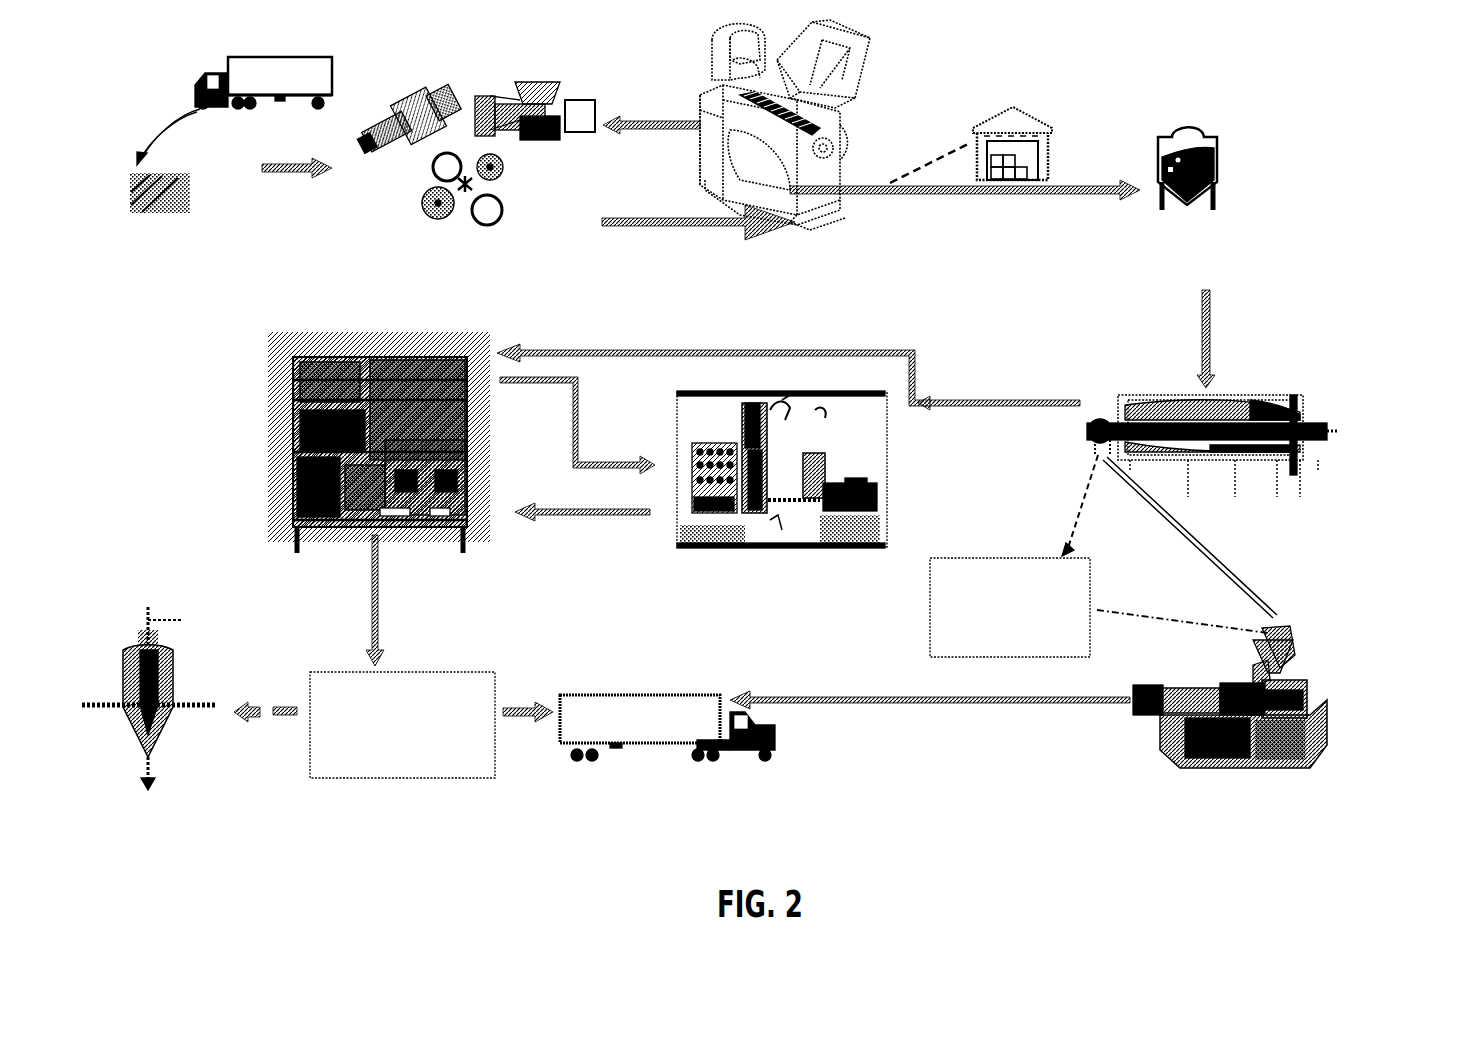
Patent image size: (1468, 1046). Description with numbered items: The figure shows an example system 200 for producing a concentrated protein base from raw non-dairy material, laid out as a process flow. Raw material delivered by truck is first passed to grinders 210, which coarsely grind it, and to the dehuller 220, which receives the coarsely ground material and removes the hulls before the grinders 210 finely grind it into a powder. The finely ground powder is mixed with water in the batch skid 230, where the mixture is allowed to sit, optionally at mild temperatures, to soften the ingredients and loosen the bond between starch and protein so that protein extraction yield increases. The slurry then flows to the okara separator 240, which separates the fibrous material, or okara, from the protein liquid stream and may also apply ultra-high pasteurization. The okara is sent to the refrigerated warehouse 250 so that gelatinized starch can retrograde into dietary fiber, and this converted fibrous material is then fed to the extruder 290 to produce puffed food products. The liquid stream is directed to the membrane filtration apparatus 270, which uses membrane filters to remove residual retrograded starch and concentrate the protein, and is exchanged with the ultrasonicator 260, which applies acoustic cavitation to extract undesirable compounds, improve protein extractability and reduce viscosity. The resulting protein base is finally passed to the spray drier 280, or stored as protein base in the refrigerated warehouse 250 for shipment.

The system 200 is at (140, 78).
The grinders 210 is at (473, 186).
The dehuller 220 is at (785, 166).
The batch skid 230 is at (1211, 204).
The okara separator 240 is at (1271, 510).
The refrigerated warehouse 250 is at (700, 668).
The ultrasonicator 260 is at (782, 519).
The membrane filtration apparatus 270 is at (400, 481).
The spray drier 280 is at (157, 662).
The extruder 290 is at (1163, 704).